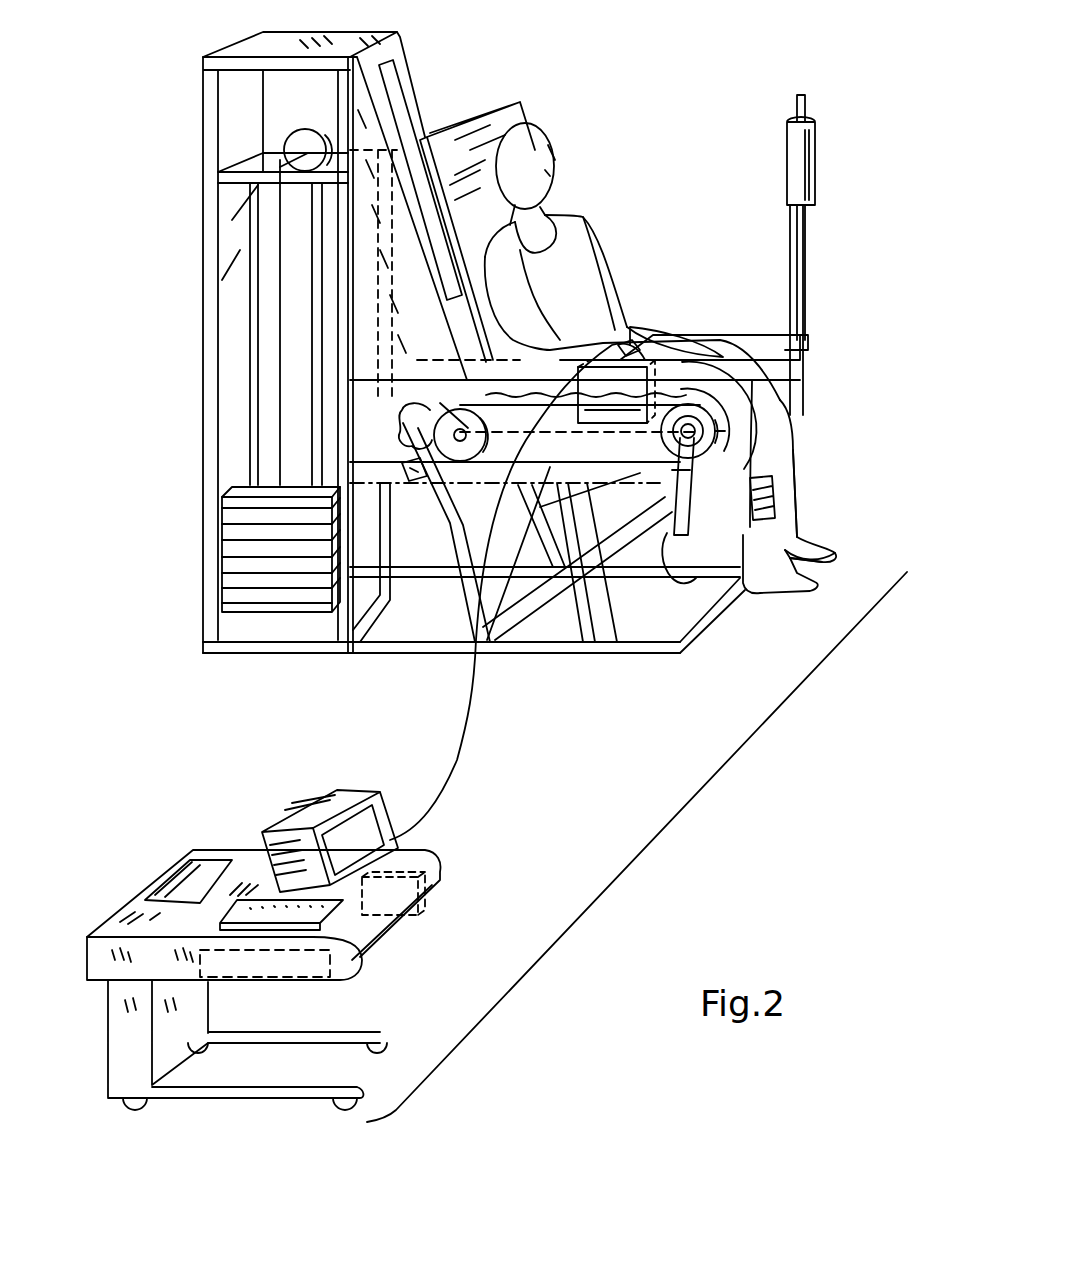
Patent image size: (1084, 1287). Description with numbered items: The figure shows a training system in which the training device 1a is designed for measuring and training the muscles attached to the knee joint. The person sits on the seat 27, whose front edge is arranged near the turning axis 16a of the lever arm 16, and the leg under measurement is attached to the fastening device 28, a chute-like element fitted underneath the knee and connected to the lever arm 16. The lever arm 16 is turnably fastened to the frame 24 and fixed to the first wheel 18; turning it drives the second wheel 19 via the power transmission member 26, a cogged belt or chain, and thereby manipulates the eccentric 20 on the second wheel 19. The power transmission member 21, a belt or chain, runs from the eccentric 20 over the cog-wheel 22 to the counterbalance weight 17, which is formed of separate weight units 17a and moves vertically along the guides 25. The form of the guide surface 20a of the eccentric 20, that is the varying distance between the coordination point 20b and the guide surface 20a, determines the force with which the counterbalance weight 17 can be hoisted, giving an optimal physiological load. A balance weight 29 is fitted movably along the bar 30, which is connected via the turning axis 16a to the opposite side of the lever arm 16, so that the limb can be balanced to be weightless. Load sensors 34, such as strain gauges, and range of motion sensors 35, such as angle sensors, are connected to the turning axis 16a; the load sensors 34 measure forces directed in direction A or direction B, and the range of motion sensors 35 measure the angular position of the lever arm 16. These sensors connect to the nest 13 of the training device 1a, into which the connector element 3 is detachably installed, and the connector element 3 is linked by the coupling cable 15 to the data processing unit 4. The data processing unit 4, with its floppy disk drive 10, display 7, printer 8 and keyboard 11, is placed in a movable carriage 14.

The training device 1a is at (640, 205).
The connector element 3 is at (630, 335).
The data processing unit 4 is at (330, 985).
The display unit 7 is at (327, 792).
The printer unit 8 is at (203, 855).
The floppy disk drive 10 is at (443, 893).
The keyboard 11 is at (345, 932).
The nest 13 is at (675, 382).
The movable carriage 14 is at (443, 928).
The coupling cable 15 is at (468, 775).
The lever arm 16 is at (663, 573).
The turning axis 16a is at (815, 328).
The counterbalance weight 17 is at (227, 547).
The weight units 17a is at (230, 497).
The first wheel 18 is at (700, 430).
The second wheel 19 is at (487, 465).
The eccentric 20 is at (450, 395).
The guide surface 20a is at (412, 432).
The coordination point 20b is at (387, 483).
The power transmission member 21 is at (280, 223).
The cog-wheel 22 is at (295, 142).
The frame 24 is at (345, 518).
The guides 25 is at (312, 305).
The power transmission member 26 is at (530, 595).
The seat 27 is at (483, 125).
The fastening device 28 is at (760, 487).
The balance weight 29 is at (810, 158).
The bar 30 is at (805, 232).
The load sensors 34 is at (790, 572).
The range of motion sensors 35 is at (697, 407).
The direction A is at (728, 527).
The direction B is at (820, 504).